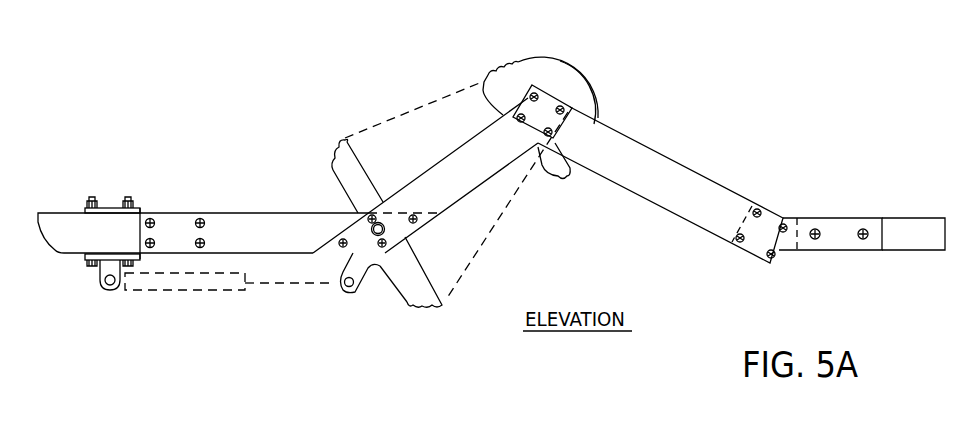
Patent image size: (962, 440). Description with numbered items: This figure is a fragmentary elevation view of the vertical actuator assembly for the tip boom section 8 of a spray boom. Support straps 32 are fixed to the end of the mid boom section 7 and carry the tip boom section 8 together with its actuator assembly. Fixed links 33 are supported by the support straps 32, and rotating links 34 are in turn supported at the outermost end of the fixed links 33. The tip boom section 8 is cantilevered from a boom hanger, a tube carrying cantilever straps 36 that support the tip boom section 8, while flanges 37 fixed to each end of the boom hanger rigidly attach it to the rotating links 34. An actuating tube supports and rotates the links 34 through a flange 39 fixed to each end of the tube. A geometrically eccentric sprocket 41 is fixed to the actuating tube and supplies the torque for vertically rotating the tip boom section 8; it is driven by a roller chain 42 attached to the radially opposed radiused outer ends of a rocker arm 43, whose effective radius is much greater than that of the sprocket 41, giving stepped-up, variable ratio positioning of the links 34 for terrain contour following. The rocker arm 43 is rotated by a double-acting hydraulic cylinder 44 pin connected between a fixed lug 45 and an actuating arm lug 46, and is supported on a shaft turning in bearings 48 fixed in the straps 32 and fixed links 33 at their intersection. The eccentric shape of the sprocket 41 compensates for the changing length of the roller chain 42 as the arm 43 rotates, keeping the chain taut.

The mid boom section 7 is at (56, 213).
The tip boom section 8 is at (915, 218).
The support straps 32 is at (210, 212).
The fixed links 33 is at (437, 165).
The rotating links 34 is at (705, 152).
The cantilever straps 36 is at (843, 218).
The flanges 37 is at (747, 253).
The flange 39 is at (560, 98).
The geometrically eccentric sprocket 41 is at (572, 82).
The roller chain 42 is at (507, 63).
The rocker arm 43 is at (425, 272).
The double-acting hydraulic cylinder 44 is at (153, 291).
The fixed lug 45 is at (105, 284).
The actuating arm lug 46 is at (345, 292).
The bearings 48 is at (371, 230).